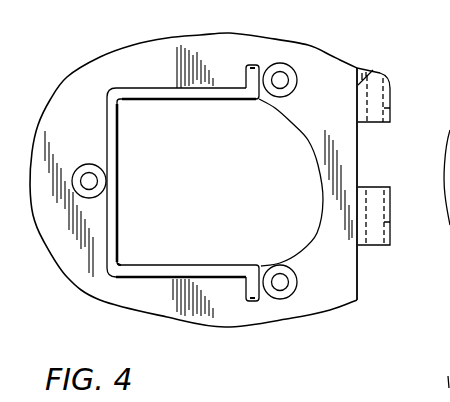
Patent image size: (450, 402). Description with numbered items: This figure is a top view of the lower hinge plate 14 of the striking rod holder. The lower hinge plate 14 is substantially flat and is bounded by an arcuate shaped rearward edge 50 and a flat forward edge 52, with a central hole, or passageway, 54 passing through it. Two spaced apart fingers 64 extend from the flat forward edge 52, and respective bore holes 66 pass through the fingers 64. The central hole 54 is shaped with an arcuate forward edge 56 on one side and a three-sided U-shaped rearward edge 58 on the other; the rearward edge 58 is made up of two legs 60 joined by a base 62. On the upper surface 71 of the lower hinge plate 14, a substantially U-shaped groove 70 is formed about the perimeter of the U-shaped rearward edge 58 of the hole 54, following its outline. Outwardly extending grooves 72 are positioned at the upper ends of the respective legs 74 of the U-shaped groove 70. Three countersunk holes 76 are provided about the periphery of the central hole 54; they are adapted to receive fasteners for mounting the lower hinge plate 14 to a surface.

The lower hinge plate 14 is at (275, 41).
The arcuate shaped rearward edge 50 is at (31, 150).
The flat forward edge 52 is at (367, 73).
The central hole 54 is at (296, 118).
The arcuate forward edge 56 is at (322, 176).
The three-sided U-shaped rearward edge 58 is at (182, 101).
The legs 60 is at (222, 101).
The base 62 is at (120, 183).
The fingers 64 is at (390, 89).
The bore holes 66 is at (392, 110).
The U-shaped groove 70 is at (136, 88).
The upper surface 71 is at (165, 72).
The outwardly extending grooves 72 is at (254, 64).
The legs 74 is at (147, 265).
The countersunk holes 76 is at (296, 66).